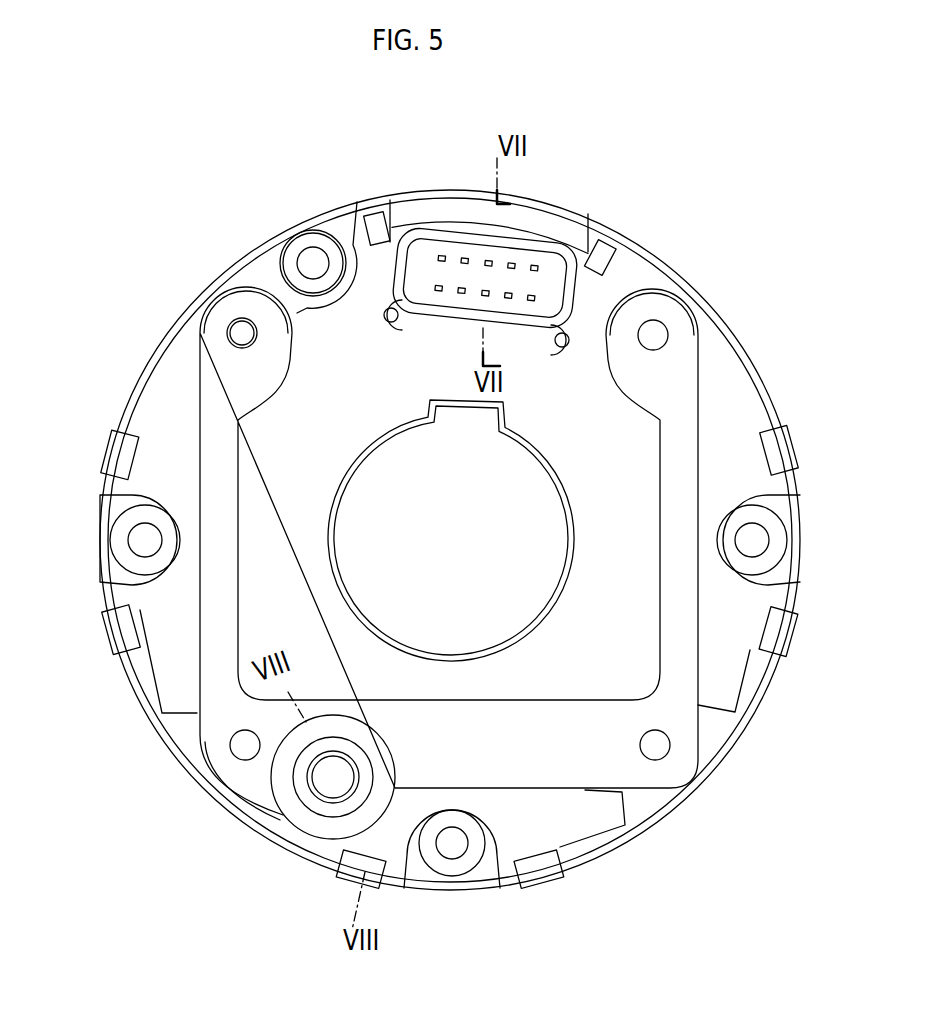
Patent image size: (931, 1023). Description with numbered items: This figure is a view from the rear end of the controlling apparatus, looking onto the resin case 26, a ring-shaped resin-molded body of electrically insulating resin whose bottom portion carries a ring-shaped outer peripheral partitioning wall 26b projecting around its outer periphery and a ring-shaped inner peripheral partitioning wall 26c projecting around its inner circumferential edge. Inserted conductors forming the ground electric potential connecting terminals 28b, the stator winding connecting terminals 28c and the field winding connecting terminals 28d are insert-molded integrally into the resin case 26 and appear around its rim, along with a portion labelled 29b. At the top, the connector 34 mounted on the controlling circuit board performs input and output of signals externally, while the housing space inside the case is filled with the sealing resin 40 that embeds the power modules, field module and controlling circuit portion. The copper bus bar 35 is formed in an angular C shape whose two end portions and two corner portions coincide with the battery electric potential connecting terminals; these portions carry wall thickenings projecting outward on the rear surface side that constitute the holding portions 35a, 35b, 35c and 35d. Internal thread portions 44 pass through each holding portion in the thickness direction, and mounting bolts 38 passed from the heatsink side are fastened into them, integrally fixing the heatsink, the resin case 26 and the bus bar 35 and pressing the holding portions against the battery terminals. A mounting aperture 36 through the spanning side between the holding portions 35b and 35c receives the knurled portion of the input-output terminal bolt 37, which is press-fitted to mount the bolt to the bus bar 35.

The resin case 26 is at (137, 700).
The outer peripheral partitioning wall 26b is at (140, 410).
The inner peripheral partitioning wall 26c is at (328, 542).
The ground electric potential connecting terminals 28b is at (125, 535).
The stator winding connecting terminals 28c is at (108, 437).
The field winding connecting terminals 28d is at (378, 218).
The boss 29b is at (316, 255).
The connector 34 is at (528, 240).
The bus bar 35 is at (192, 400).
The holding portion 35a is at (213, 323).
The holding portion 35b is at (212, 750).
The holding portion 35c is at (682, 743).
The holding portion 35d is at (676, 318).
The mounting aperture 36 is at (325, 785).
The input-output terminal bolt 37 is at (332, 787).
The mounting bolts 38 is at (243, 333).
The sealing resin 40 is at (343, 432).
The internal thread portions 44 is at (247, 318).